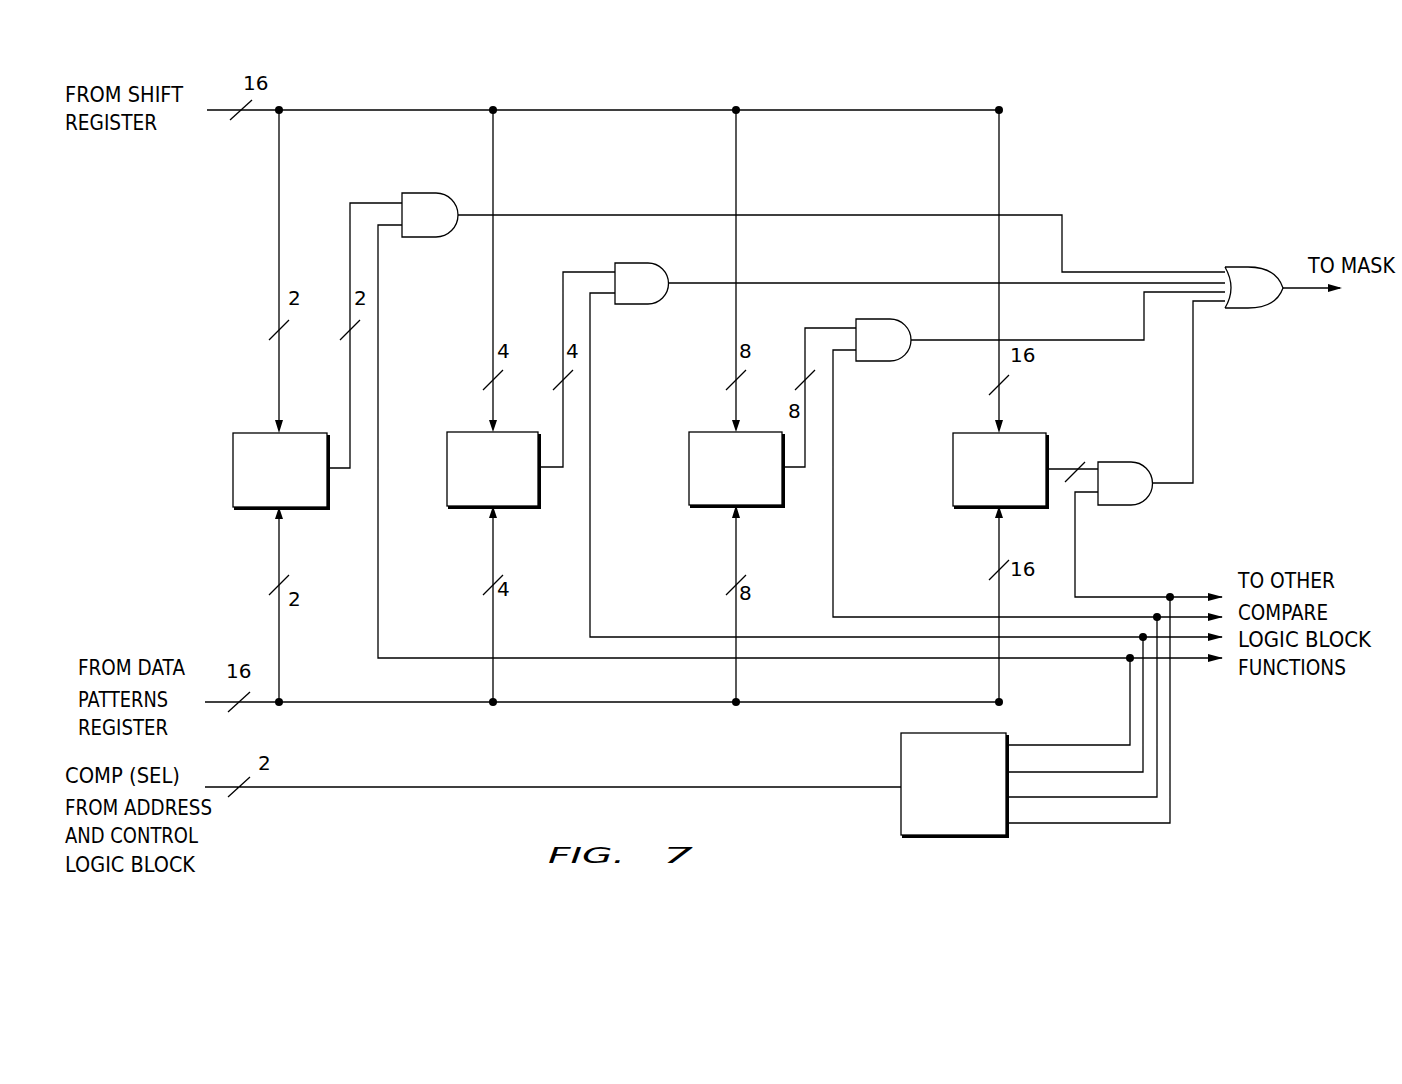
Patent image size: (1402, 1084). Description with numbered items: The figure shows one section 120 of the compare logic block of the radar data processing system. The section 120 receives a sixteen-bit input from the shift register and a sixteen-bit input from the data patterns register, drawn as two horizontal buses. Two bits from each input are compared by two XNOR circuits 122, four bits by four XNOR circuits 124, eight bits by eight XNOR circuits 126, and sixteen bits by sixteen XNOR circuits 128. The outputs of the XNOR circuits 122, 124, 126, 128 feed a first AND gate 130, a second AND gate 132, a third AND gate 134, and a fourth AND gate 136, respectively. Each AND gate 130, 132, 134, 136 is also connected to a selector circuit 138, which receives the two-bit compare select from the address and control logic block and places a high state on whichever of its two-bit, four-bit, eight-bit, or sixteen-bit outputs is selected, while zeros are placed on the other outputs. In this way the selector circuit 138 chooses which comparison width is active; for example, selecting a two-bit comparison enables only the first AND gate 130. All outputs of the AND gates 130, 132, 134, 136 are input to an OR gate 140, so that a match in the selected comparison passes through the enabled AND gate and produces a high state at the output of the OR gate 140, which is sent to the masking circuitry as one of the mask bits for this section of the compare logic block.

The section of the compare logic block 120 is at (1090, 150).
The two XNOR circuits 122 is at (235, 467).
The four XNOR circuits 124 is at (447, 468).
The eight XNOR circuits 126 is at (690, 468).
The sixteen XNOR circuits 128 is at (953, 468).
The first AND gate 130 is at (418, 193).
The second AND gate 132 is at (630, 263).
The third AND gate 134 is at (870, 319).
The fourth AND gate 136 is at (1113, 462).
The selector circuit 138 is at (901, 757).
The OR gate 140 is at (1233, 267).